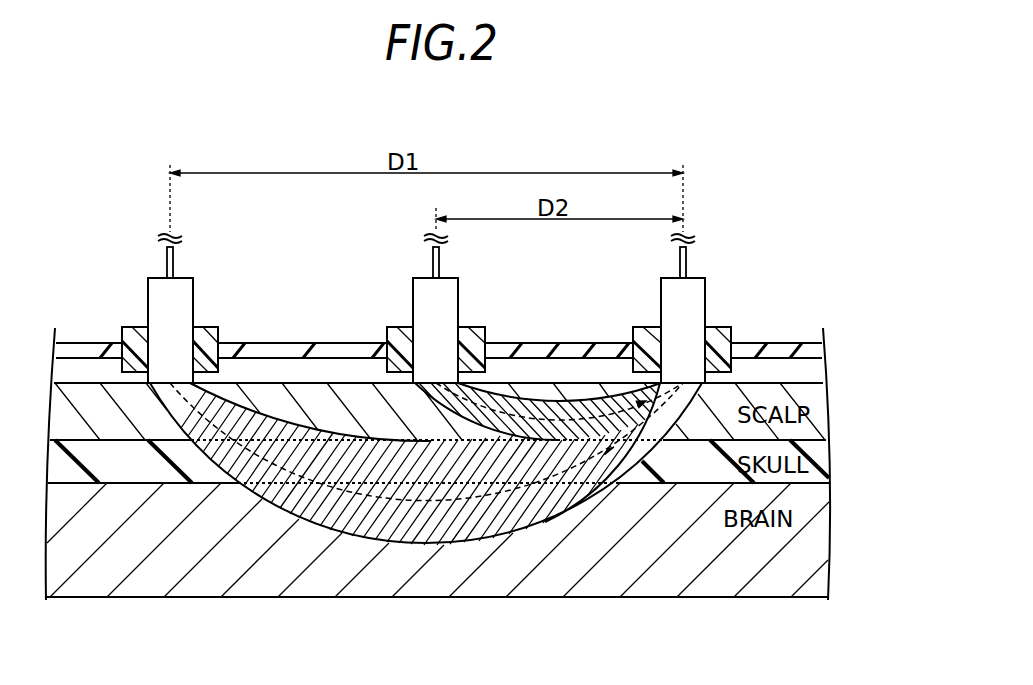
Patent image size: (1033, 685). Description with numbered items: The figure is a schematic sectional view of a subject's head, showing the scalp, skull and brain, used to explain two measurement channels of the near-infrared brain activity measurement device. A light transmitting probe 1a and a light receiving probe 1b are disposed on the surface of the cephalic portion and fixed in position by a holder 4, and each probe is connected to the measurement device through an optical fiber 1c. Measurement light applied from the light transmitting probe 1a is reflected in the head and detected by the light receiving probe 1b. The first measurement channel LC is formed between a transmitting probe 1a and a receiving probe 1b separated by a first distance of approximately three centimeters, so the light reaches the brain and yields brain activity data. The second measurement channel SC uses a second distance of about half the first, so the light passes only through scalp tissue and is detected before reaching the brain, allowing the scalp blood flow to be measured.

The light transmitting probe 1a is at (180, 305).
The light receiving probe 1b is at (668, 305).
The optical fiber 1c is at (177, 265).
The holder 4 is at (778, 342).
The second measurement channel SC is at (553, 408).
The first measurement channel LC is at (337, 487).